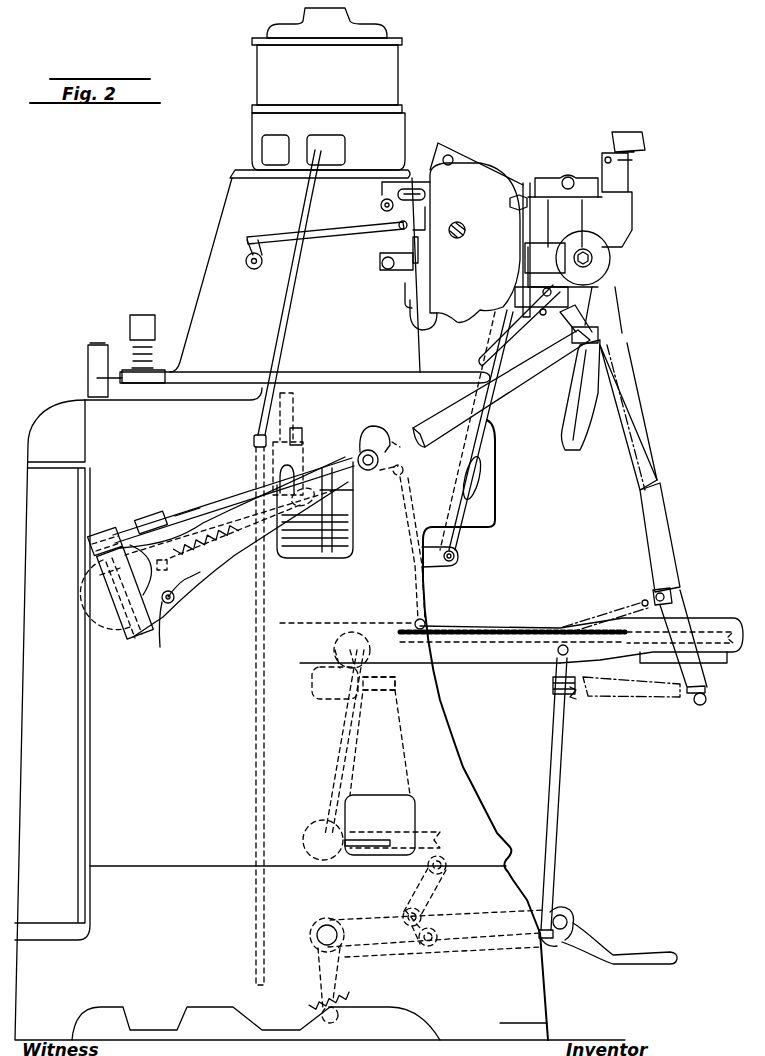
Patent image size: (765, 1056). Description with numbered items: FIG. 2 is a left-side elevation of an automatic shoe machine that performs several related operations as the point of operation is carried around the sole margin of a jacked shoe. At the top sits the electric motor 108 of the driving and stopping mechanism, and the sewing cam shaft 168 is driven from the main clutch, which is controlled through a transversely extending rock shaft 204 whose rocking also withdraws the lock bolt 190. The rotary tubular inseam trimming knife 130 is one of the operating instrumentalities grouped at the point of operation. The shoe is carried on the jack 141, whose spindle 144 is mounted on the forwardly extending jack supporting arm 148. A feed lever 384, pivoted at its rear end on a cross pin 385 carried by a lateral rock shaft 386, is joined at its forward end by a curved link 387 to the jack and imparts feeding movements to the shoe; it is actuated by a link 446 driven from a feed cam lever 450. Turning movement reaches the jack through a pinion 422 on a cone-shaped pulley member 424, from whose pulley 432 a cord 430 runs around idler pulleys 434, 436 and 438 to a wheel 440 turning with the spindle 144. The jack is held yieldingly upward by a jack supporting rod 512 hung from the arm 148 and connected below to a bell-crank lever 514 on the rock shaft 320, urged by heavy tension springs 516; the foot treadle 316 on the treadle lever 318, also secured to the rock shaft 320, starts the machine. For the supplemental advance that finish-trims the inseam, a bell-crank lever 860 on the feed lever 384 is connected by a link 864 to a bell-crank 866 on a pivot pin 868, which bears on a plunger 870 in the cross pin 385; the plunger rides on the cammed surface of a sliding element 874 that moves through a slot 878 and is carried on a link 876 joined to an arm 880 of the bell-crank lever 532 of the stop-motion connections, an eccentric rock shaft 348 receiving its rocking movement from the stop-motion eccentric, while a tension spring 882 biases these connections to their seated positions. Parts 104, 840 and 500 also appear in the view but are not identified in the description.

The electric motor 108 is at (398, 75).
The engine body 104 is at (222, 213).
The rock shaft 204 is at (385, 206).
The rotary tubular inseam trimming knife 130 is at (608, 283).
The sewing cam shaft 168 is at (467, 220).
The lock bolt 190 is at (420, 238).
The throttle link rod 840 is at (498, 360).
The pivot bracket 500 is at (432, 565).
The feed lever 384 is at (503, 397).
The curved link 387 is at (570, 450).
The jack 141 is at (636, 416).
The spindle 144 is at (666, 515).
The wheel 440 is at (722, 630).
The cord 430 is at (492, 622).
The jack supporting arm 148 is at (520, 664).
The idler pulley 438 is at (368, 640).
The jack supporting rod 512 is at (556, 790).
The treadle lever 318 is at (566, 912).
The foot treadle 316 is at (636, 957).
The bell-crank lever 514 is at (556, 948).
The rock shaft 320 is at (318, 930).
The tension springs 516 is at (352, 994).
The pulley 432 is at (395, 846).
The idler pulley 436 is at (335, 698).
The pinion 422 is at (395, 692).
The cone-shaped pulley member 424 is at (410, 806).
The idler pulley 434 is at (335, 808).
The arm 880 is at (387, 418).
The eccentric rock shaft 348 is at (290, 401).
The bell-crank lever 532 is at (395, 478).
The feed cam lever 450 is at (350, 518).
The link 446 is at (348, 462).
The bell-crank lever 860 is at (252, 492).
The link 876 is at (185, 512).
The sliding element 874 is at (150, 518).
The cross pin 385 is at (102, 530).
The slot 878 is at (96, 548).
The link 864 is at (228, 573).
The tension spring 882 is at (240, 553).
The pivot pin 868 is at (175, 600).
The bell-crank 866 is at (165, 604).
The lateral rock shaft 386 is at (118, 622).
The plunger 870 is at (100, 575).